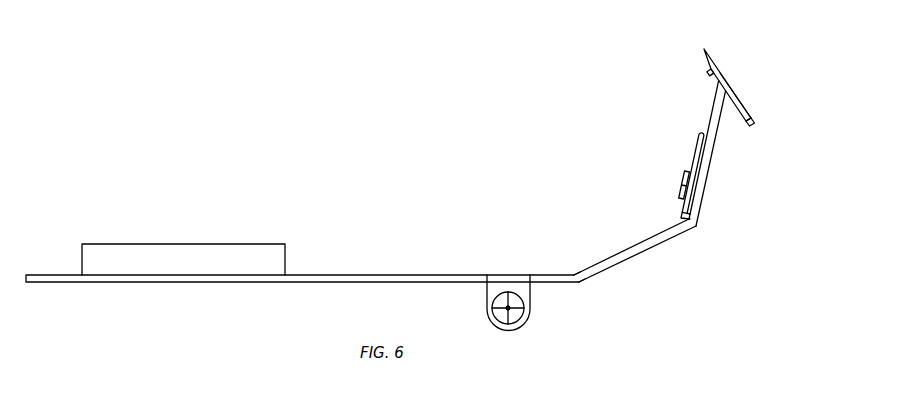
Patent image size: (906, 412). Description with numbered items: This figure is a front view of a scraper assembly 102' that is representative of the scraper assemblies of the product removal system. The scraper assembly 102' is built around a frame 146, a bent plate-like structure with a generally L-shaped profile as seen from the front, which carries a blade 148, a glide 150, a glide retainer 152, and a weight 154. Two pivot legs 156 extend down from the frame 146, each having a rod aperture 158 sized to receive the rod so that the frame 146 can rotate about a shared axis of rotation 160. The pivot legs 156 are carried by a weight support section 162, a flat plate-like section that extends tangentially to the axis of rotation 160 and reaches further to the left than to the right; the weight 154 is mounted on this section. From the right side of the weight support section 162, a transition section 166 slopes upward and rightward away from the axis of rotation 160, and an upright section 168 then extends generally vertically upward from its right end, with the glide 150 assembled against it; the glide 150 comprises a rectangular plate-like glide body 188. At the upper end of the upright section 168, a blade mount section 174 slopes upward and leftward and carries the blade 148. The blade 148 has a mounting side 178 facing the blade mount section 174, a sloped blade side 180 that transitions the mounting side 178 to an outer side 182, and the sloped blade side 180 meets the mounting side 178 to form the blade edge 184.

The scraper assembly 102' is at (407, 136).
The frame 146 is at (583, 282).
The blade 148 is at (754, 114).
The glide 150 is at (699, 137).
The glide retainer 152 is at (680, 184).
The weight 154 is at (285, 243).
The pivot legs 156 is at (512, 330).
The rod aperture 158 is at (494, 299).
The axis of rotation 160 is at (509, 308).
The weight support section 162 is at (212, 282).
The transition section 166 is at (663, 242).
The upright section 168 is at (706, 182).
The blade mount section 174 is at (708, 74).
The mounting side 178 is at (740, 120).
The sloped blade side 180 is at (716, 58).
The outer side 182 is at (738, 89).
The blade edge 184 is at (704, 48).
The glide body 188 is at (692, 203).